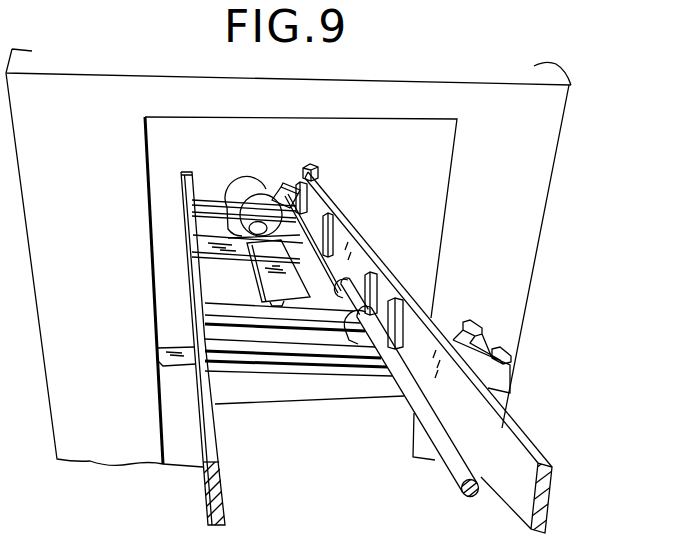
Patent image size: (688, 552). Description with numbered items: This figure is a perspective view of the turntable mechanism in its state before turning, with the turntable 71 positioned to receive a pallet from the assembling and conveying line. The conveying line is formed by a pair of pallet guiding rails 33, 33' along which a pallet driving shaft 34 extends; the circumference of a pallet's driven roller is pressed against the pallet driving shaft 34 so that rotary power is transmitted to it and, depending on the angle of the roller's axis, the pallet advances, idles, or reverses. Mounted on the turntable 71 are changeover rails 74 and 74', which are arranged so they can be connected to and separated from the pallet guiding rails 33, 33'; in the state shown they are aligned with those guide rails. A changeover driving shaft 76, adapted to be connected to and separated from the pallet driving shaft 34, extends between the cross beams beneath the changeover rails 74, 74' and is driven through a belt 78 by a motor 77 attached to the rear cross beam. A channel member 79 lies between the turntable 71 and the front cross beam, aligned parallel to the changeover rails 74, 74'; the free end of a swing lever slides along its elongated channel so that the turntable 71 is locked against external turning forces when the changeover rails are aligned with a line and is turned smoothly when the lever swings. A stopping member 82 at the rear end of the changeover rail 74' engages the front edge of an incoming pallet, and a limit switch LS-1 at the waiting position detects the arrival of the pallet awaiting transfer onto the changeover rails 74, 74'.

The pallet guiding rail 33 is at (178, 441).
The pallet guiding rail 33' is at (468, 397).
The pallet driving shaft 34 is at (408, 391).
The turntable 71 is at (205, 243).
The changeover rail 74 is at (160, 256).
The changeover rail 74' is at (421, 317).
The changeover driving shaft 76 is at (337, 207).
The motor 77 is at (245, 202).
The belt 78 is at (283, 192).
The channel member 79 is at (270, 288).
The stopping member 82 is at (313, 165).
The limit switch LS-1 is at (478, 324).